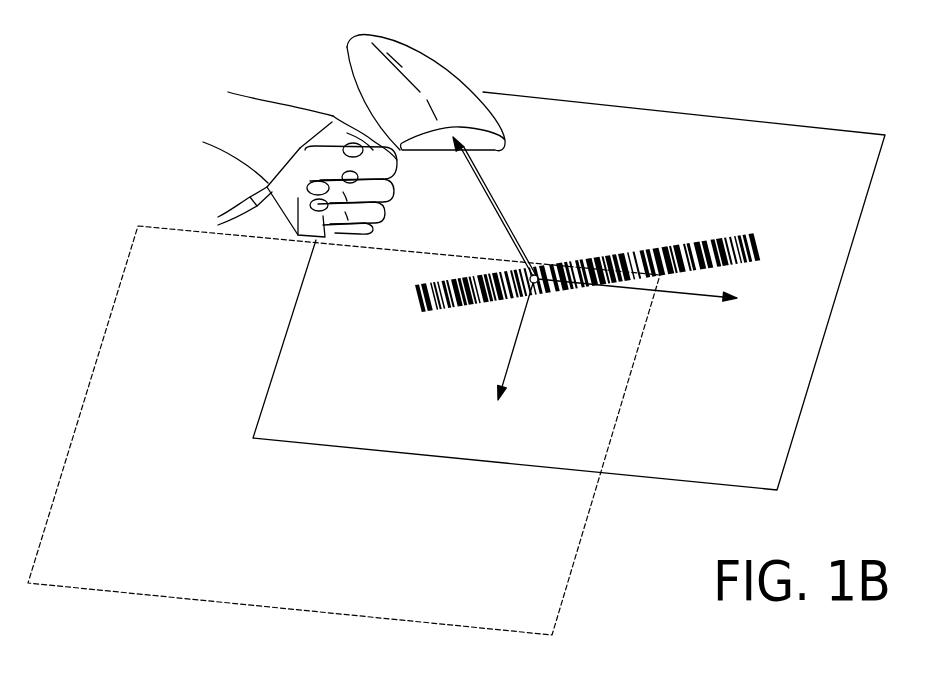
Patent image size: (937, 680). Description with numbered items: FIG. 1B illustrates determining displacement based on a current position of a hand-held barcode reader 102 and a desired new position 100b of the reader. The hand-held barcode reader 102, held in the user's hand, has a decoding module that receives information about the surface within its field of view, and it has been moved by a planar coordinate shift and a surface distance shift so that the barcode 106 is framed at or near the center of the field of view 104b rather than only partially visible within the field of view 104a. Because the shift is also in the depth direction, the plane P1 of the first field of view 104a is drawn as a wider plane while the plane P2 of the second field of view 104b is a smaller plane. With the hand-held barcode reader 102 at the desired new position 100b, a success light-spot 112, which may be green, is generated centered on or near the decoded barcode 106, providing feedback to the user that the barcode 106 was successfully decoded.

The desired new position 100b is at (203, 82).
The hand-held barcode reader 102 is at (344, 58).
The field of view 104a is at (336, 430).
The field of view 104b is at (531, 291).
The barcode 106 is at (415, 295).
The light-spot 112 is at (538, 275).
The wider plane P1 is at (498, 575).
The smaller plane P2 is at (723, 430).